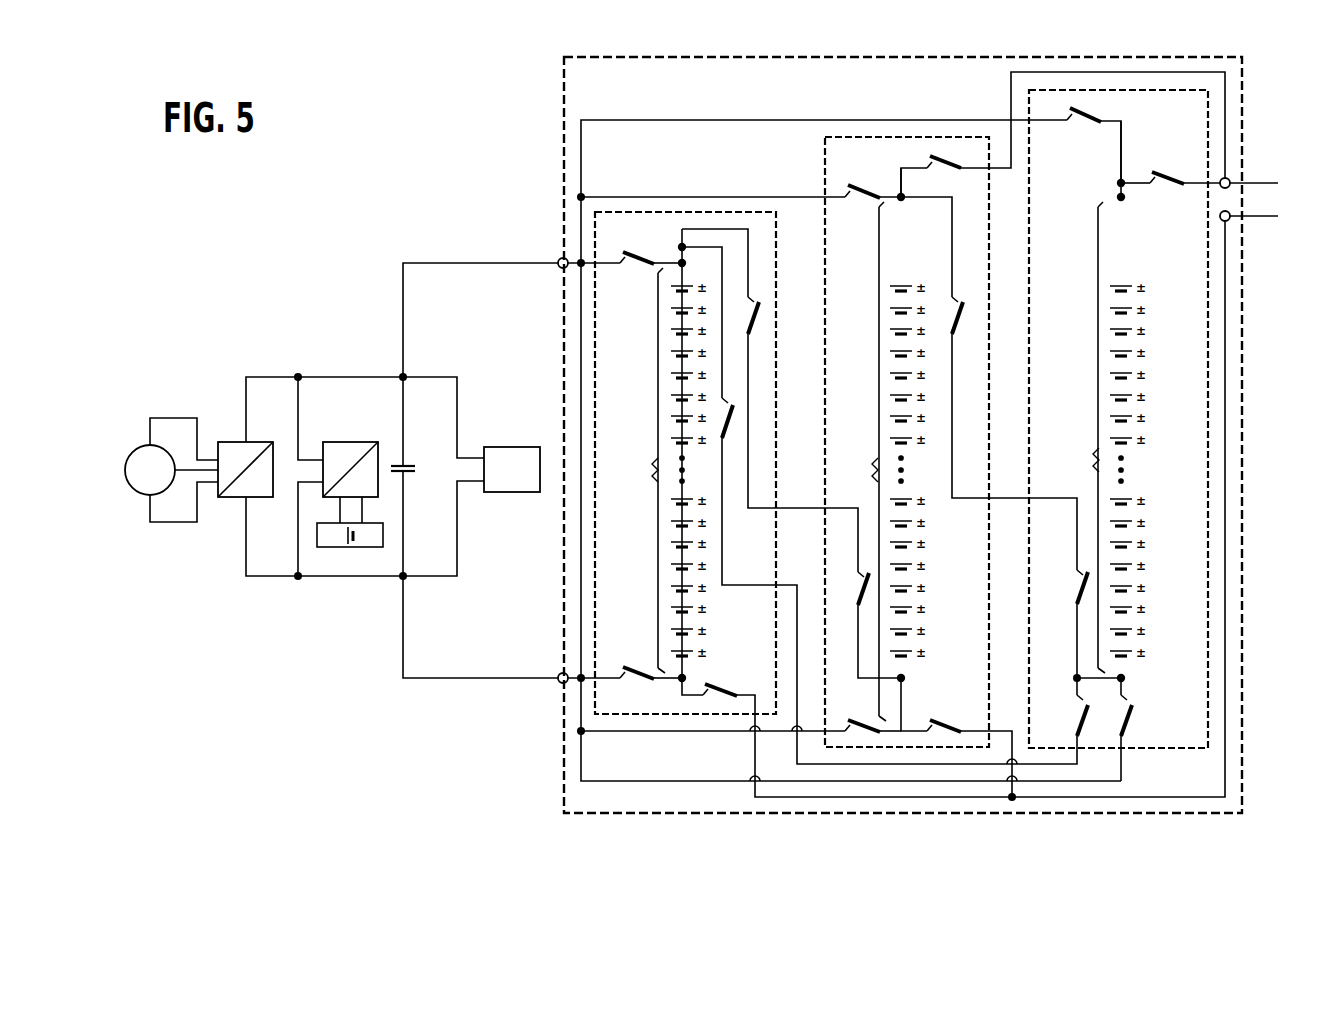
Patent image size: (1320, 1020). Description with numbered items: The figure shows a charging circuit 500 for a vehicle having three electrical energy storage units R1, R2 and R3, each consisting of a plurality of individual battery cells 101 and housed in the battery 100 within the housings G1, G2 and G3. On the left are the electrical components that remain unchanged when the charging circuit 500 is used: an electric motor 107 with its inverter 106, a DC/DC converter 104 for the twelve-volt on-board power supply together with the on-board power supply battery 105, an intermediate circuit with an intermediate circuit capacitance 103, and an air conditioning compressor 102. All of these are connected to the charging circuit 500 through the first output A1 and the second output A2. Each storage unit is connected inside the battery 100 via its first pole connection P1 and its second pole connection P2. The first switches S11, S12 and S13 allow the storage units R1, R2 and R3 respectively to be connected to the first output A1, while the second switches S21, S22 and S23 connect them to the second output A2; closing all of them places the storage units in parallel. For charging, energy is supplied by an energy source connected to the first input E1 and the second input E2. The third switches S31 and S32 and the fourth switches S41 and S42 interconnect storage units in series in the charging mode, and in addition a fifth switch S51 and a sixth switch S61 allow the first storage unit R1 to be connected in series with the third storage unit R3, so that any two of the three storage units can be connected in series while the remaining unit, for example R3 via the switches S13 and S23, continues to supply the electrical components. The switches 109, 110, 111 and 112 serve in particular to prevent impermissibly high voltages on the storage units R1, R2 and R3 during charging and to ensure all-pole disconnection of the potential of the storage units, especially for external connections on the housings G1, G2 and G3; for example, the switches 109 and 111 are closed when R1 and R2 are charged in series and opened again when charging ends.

The charging circuit 500 is at (365, 215).
The battery 100 is at (564, 779).
The battery cell 101 is at (675, 397).
The air conditioning compressor 102 is at (508, 446).
The intermediate circuit capacitance 103 is at (408, 462).
The DC/DC converter 104 is at (360, 441).
The on-board power supply battery 105 is at (345, 556).
The inverter 106 is at (230, 441).
The electric motor 107 is at (142, 446).
The switch 109 is at (720, 686).
The switch 110 is at (970, 706).
The switch 111 is at (940, 158).
The switch 112 is at (1165, 172).
The first output A1 is at (558, 259).
The second output A2 is at (558, 683).
The first input E1 is at (1229, 178).
The second input E2 is at (1229, 221).
The housing G1 is at (637, 212).
The housing G2 is at (825, 160).
The housing G3 is at (1208, 106).
The first pole connection P1 is at (680, 262).
The second pole connection P2 is at (680, 680).
The first electrical energy storage unit R1 is at (658, 470).
The second electrical energy storage unit R2 is at (878, 464).
The third electrical energy storage unit R3 is at (1093, 460).
The first first switch S11 is at (640, 265).
The second first switch S12 is at (882, 168).
The third first switch S13 is at (1088, 122).
The first second switch S21 is at (645, 668).
The second second switch S22 is at (876, 704).
The third second switch S23 is at (1130, 720).
The first third switch S31 is at (758, 318).
The second third switch S32 is at (960, 318).
The first fourth switch S41 is at (860, 588).
The second fourth switch S42 is at (1080, 594).
The fifth switch S51 is at (735, 425).
The sixth switch S61 is at (1080, 728).